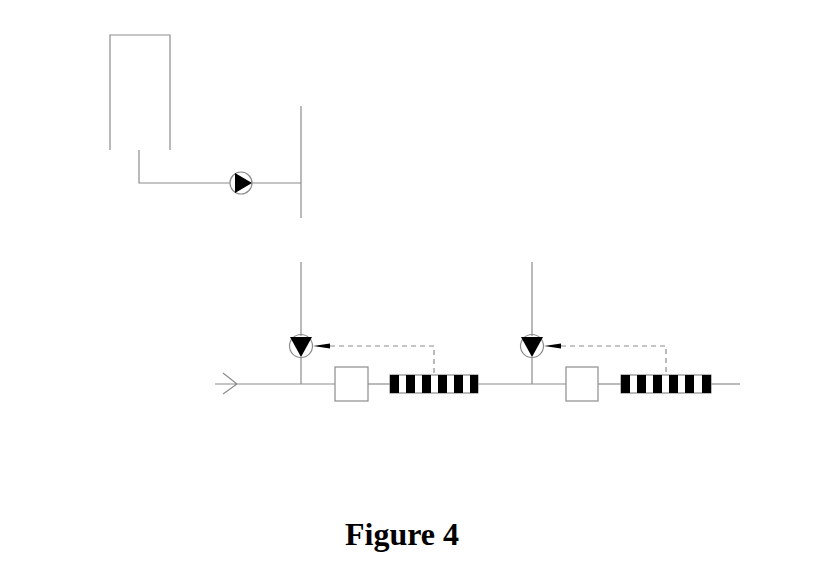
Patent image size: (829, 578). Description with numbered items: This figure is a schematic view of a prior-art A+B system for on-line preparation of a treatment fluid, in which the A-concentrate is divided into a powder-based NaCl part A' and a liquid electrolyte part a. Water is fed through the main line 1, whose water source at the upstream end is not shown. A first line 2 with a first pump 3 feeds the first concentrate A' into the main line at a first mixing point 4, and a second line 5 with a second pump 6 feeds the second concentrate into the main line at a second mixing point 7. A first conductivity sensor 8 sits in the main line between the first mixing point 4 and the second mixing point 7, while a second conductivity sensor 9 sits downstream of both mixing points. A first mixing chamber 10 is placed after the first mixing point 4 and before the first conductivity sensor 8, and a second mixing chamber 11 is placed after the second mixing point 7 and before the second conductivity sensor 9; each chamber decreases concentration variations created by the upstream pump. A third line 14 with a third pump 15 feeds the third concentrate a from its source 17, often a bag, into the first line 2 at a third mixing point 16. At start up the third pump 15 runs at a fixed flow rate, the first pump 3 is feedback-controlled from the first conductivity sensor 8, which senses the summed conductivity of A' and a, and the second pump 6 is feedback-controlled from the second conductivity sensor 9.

The main line 1 is at (266, 384).
The first line 2 is at (303, 218).
The first pump 3 is at (304, 338).
The first mixing point 4 is at (301, 386).
The second line 5 is at (533, 292).
The second pump 6 is at (540, 338).
The second mixing point 7 is at (532, 387).
The first conductivity sensor 8 is at (429, 393).
The second conductivity sensor 9 is at (659, 393).
The first mixing chamber 10 is at (349, 402).
The second mixing chamber 11 is at (579, 401).
The third line 14 is at (196, 184).
The third pump 15 is at (241, 195).
The third mixing point 16 is at (303, 182).
The source 17 is at (116, 97).